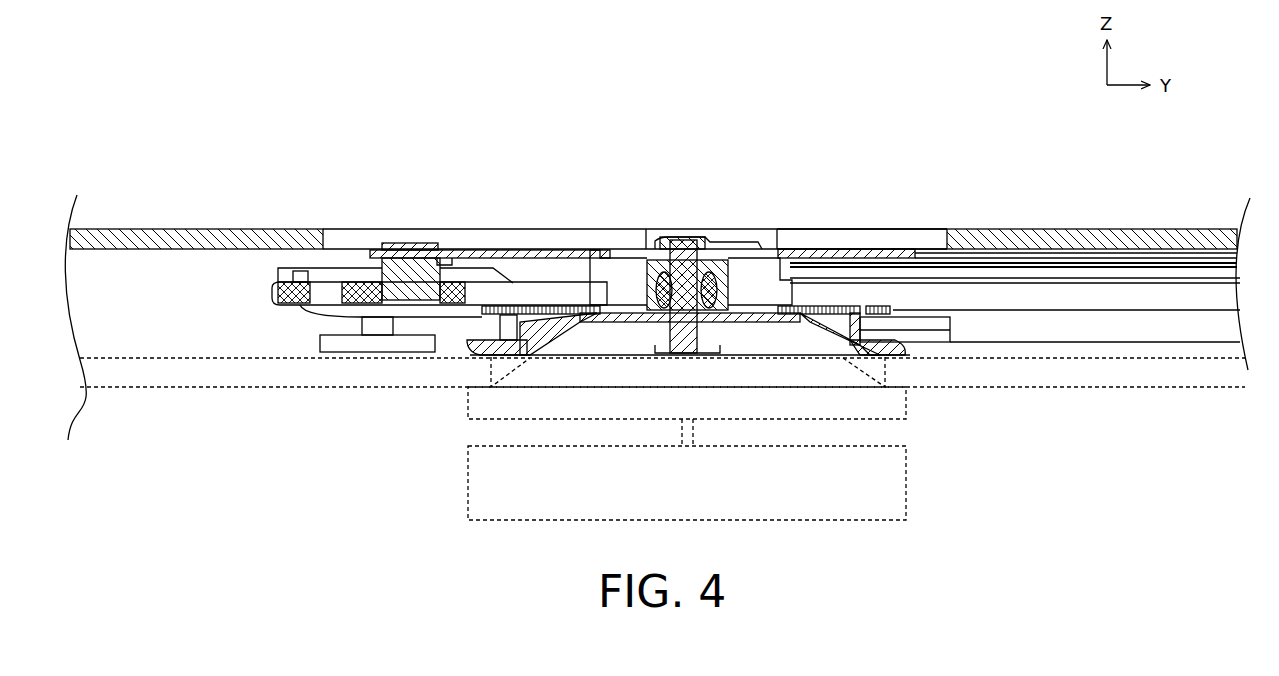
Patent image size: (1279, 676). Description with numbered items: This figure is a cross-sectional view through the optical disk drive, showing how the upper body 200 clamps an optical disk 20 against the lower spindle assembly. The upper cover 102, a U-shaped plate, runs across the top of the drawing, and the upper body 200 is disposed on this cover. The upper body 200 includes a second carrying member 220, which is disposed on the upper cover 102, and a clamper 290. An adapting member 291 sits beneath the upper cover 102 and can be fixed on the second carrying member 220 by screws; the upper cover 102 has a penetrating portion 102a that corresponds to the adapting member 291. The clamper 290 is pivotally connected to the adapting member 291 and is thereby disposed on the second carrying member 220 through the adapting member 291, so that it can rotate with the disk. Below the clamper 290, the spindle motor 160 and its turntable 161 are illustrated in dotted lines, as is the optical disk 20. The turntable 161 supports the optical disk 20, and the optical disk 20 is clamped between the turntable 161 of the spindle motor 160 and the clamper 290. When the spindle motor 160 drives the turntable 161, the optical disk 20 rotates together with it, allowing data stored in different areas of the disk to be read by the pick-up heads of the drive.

The optical disk 20 is at (1092, 378).
The upper cover 102 is at (1007, 238).
The penetrating portion 102a is at (823, 237).
The spindle motor 160 is at (906, 483).
The turntable 161 is at (906, 400).
The upper body 200 is at (535, 358).
The second carrying member 220 is at (492, 288).
The clamper 290 is at (492, 360).
The adapting member 291 is at (522, 245).